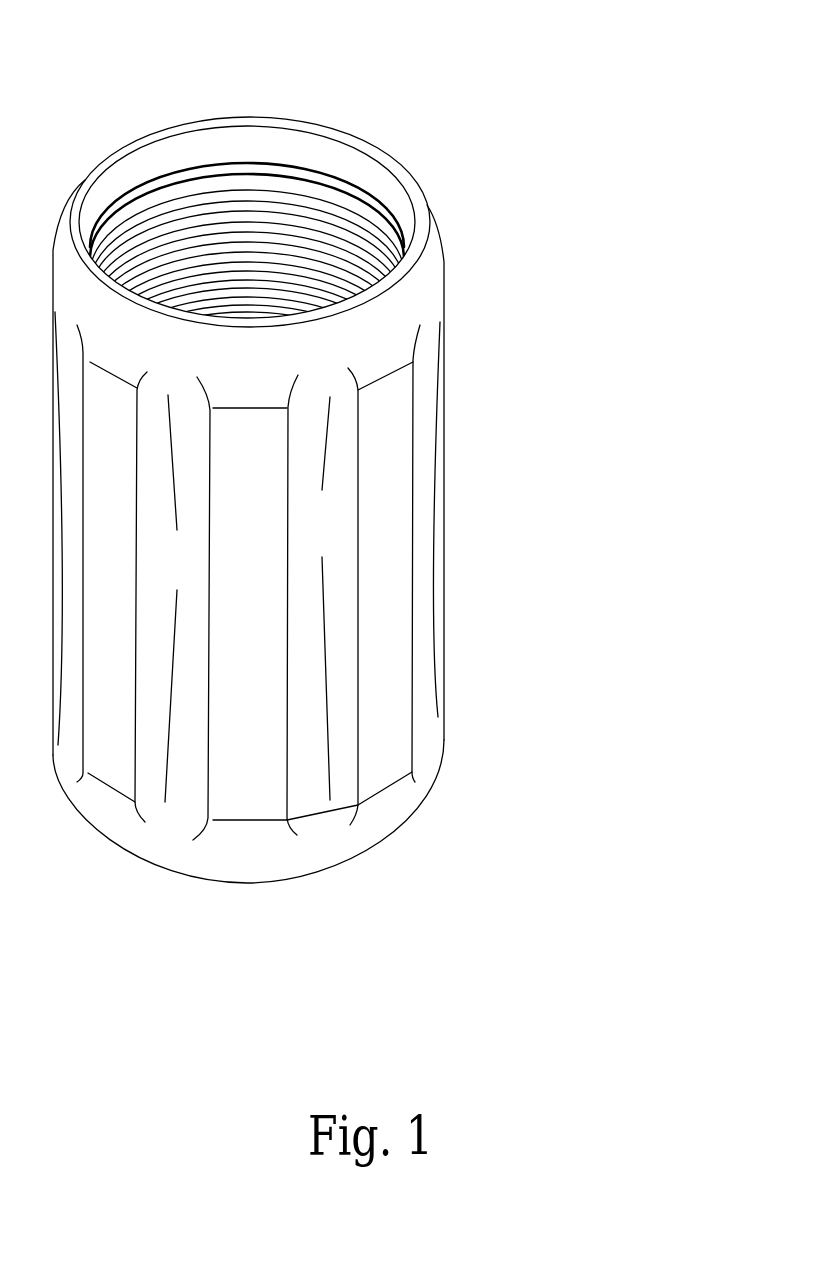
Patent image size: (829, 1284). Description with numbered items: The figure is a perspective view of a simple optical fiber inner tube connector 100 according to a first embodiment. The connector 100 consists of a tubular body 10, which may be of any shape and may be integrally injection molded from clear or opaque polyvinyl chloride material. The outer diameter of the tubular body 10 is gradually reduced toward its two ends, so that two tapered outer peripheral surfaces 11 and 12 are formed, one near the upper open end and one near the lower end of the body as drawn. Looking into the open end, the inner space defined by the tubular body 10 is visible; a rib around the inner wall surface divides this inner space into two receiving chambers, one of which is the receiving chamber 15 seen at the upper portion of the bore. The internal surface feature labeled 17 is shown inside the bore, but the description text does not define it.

The optical fiber inner tube connector 100 is at (396, 448).
The tubular body 10 is at (311, 448).
The tapered outer peripheral surface 11 is at (311, 171).
The tapered outer peripheral surface 12 is at (375, 830).
The receiving chamber 15 is at (323, 150).
The internal threads 17 is at (237, 212).